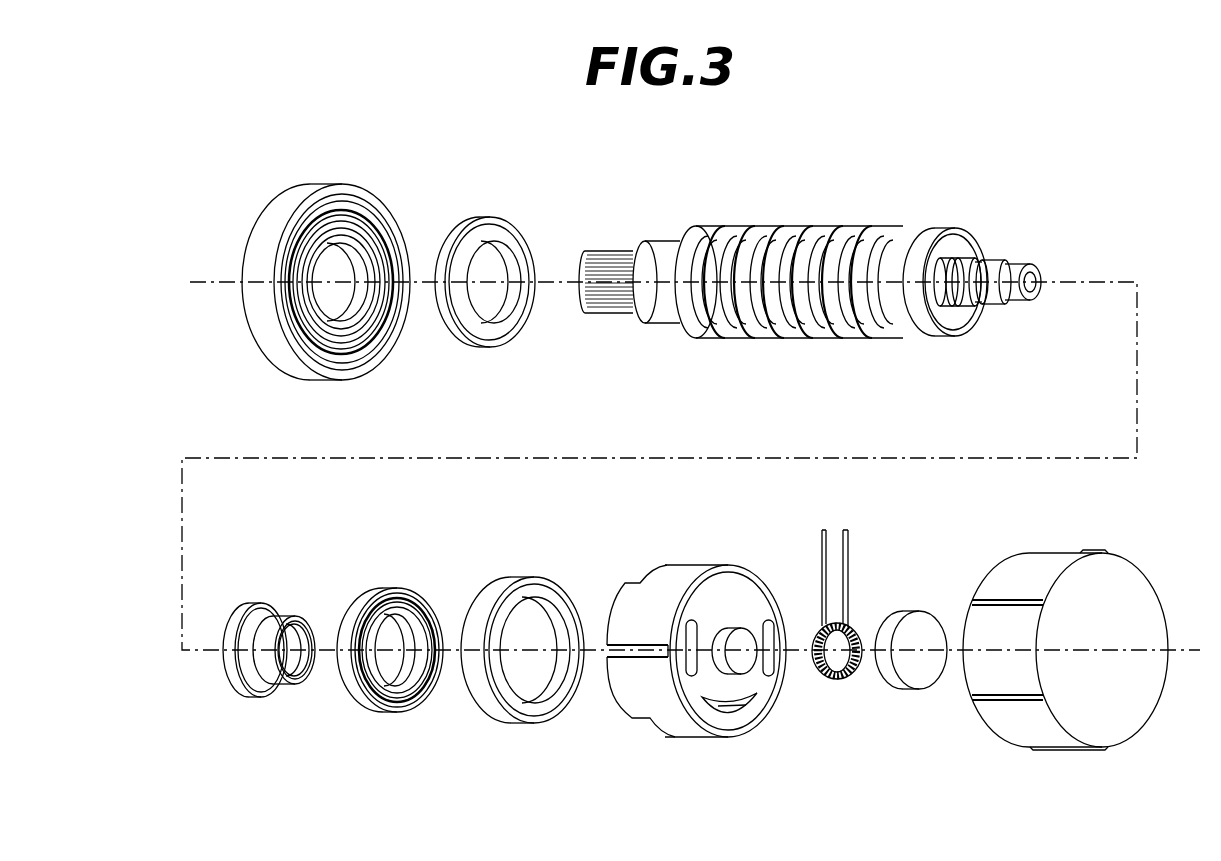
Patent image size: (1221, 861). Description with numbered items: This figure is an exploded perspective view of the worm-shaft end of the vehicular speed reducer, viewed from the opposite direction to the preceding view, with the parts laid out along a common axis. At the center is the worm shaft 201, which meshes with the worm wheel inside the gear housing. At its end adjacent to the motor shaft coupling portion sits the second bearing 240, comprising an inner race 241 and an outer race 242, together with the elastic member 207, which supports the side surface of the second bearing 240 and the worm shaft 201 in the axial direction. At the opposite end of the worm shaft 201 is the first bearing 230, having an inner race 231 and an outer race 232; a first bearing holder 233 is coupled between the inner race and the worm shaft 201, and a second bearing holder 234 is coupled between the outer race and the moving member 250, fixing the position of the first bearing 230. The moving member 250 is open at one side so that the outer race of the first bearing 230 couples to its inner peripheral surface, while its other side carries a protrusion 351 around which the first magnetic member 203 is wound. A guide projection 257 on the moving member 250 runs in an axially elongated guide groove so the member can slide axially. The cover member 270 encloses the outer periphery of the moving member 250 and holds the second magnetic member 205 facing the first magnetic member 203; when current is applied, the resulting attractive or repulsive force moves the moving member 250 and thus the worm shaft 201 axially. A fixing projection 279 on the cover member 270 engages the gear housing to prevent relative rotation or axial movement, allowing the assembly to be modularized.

The worm shaft 201 is at (821, 198).
The first magnetic member 203 is at (859, 546).
The second magnetic member 205 is at (915, 597).
The elastic member 207 is at (481, 196).
The first bearing 230 is at (372, 640).
The inner race 231 is at (415, 670).
The outer race 232 is at (350, 672).
The first bearing holder 233 is at (268, 572).
The second bearing holder 234 is at (523, 573).
The second bearing 240 is at (304, 229).
The inner race 241 is at (349, 265).
The outer race 242 is at (265, 228).
The moving member 250 is at (722, 646).
The guide projection 257 is at (633, 655).
The cover member 270 is at (1067, 641).
The fixing projection 279 is at (1017, 698).
The protrusion 351 is at (743, 658).